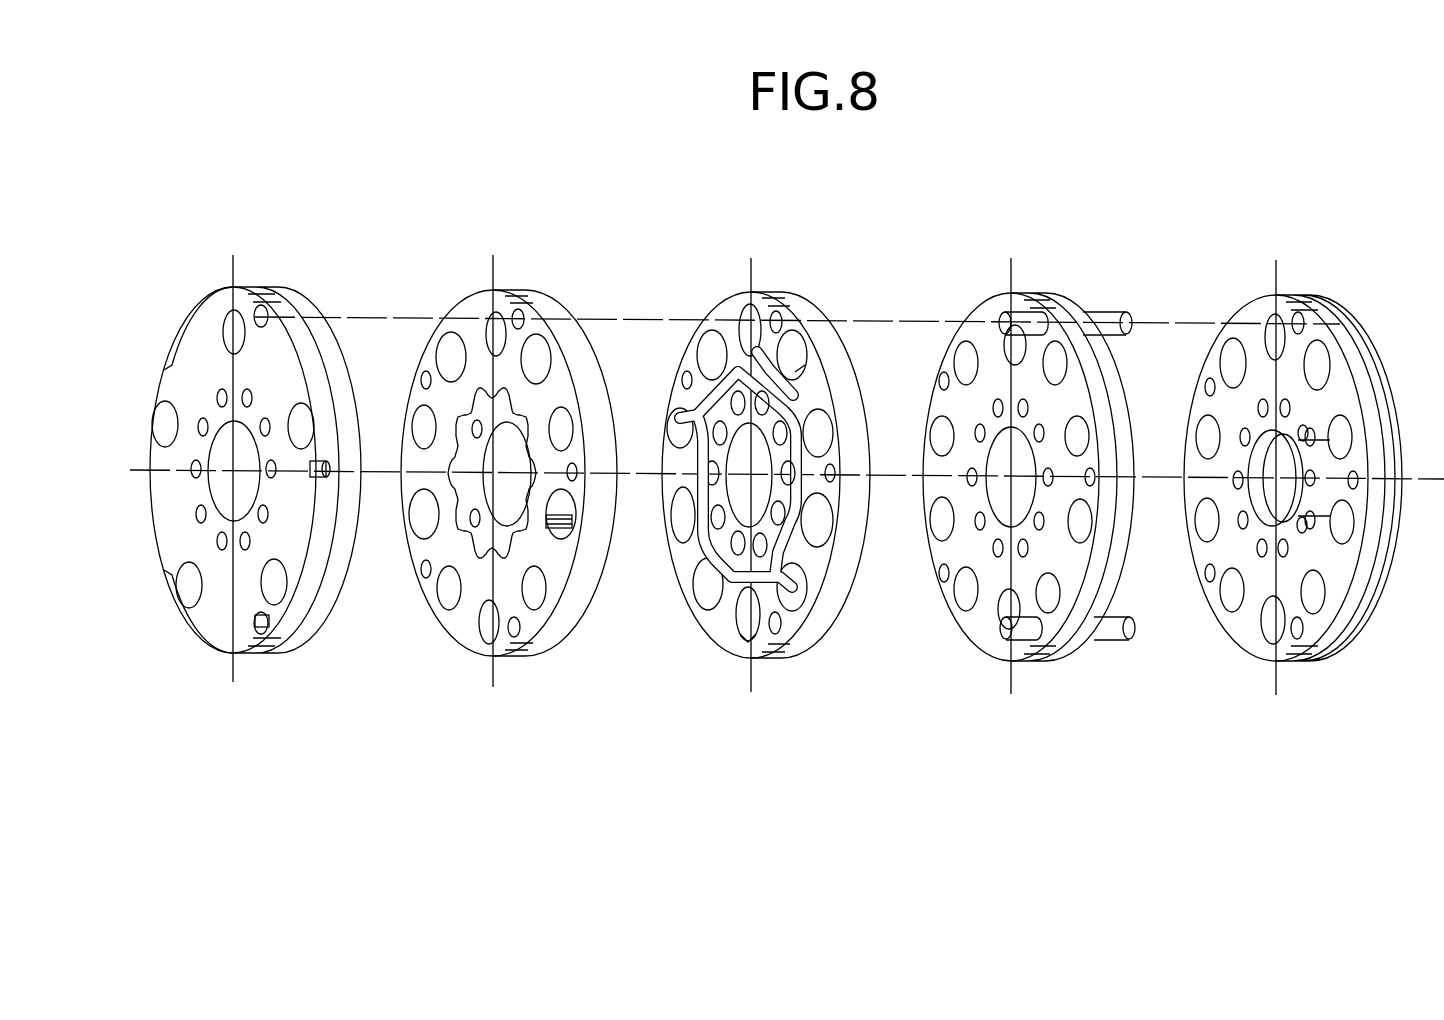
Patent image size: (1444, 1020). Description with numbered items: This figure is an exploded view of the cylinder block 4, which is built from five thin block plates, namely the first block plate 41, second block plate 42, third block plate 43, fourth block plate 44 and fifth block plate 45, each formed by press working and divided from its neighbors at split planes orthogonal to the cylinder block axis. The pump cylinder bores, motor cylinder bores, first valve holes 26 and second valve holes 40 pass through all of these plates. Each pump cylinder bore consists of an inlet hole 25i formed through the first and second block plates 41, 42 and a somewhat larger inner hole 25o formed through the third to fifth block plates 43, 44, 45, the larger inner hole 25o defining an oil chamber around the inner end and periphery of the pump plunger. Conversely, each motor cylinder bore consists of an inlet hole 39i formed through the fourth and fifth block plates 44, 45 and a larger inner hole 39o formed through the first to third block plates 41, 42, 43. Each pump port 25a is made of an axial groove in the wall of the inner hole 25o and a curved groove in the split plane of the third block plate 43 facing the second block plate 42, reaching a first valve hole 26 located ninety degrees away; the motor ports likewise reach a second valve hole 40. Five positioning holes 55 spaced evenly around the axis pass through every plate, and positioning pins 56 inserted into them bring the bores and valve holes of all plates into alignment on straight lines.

The cylinder block 4 is at (1178, 252).
The first block plate 41 is at (279, 657).
The second block plate 42 is at (507, 658).
The third block plate 43 is at (772, 662).
The fourth block plate 44 is at (1016, 663).
The fifth block plate 45 is at (1334, 652).
The inlet hole 25i is at (226, 318).
The inner hole 25o is at (749, 305).
The pump port 25a is at (574, 522).
The first valve hole 26 is at (249, 389).
The inner hole 39o is at (446, 334).
The inlet hole 39i is at (959, 346).
The second valve hole 40 is at (220, 389).
The positioning hole 55 is at (261, 305).
The positioning pin 56 is at (1115, 312).